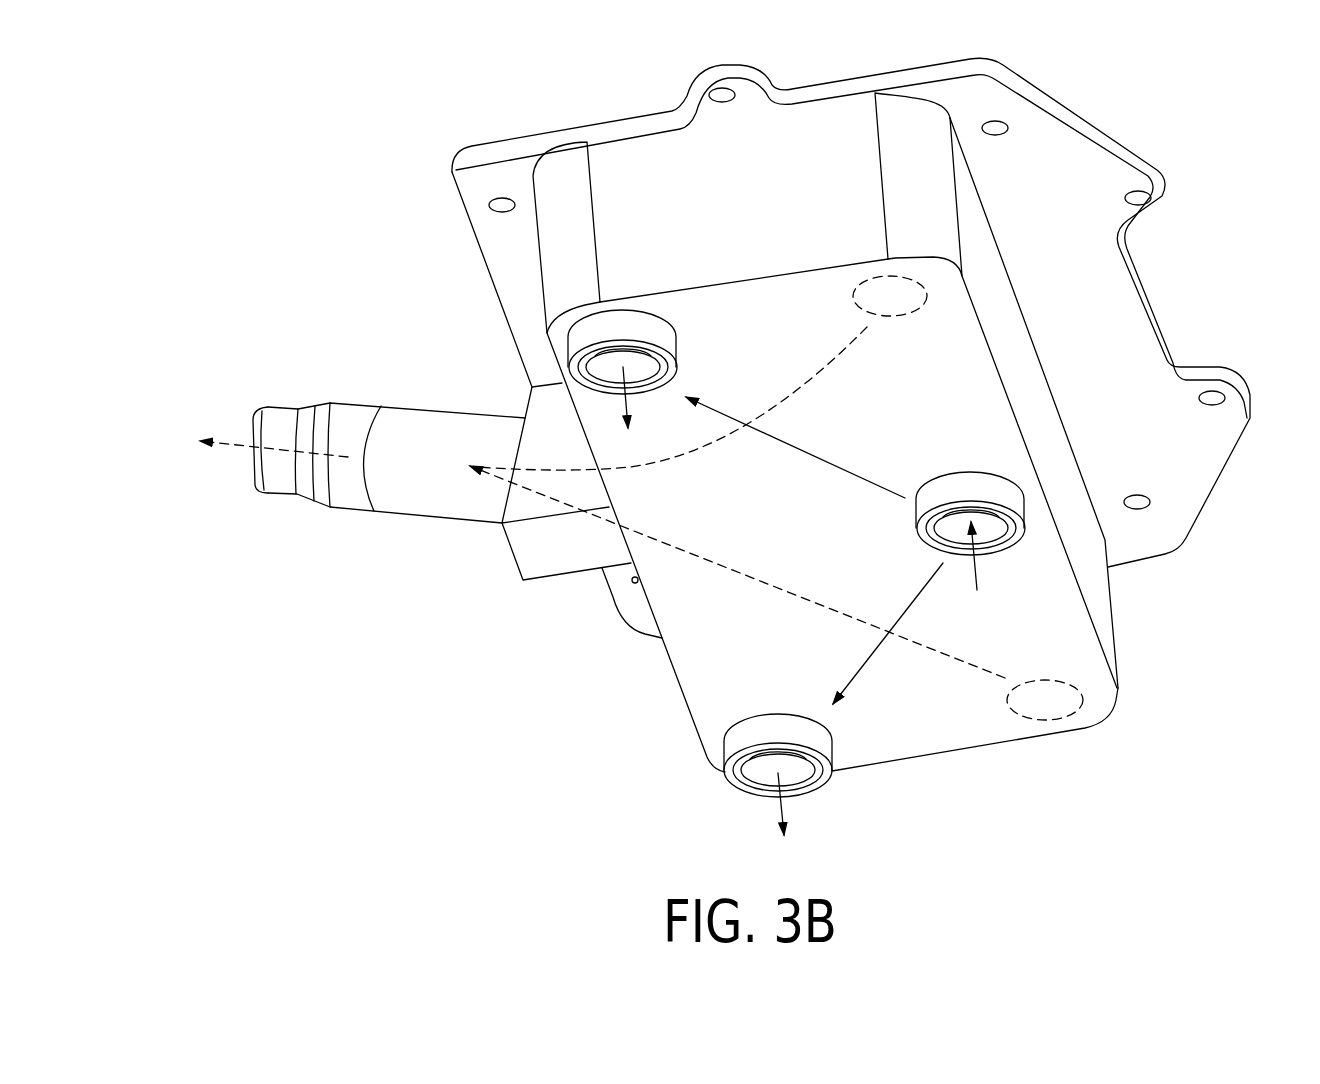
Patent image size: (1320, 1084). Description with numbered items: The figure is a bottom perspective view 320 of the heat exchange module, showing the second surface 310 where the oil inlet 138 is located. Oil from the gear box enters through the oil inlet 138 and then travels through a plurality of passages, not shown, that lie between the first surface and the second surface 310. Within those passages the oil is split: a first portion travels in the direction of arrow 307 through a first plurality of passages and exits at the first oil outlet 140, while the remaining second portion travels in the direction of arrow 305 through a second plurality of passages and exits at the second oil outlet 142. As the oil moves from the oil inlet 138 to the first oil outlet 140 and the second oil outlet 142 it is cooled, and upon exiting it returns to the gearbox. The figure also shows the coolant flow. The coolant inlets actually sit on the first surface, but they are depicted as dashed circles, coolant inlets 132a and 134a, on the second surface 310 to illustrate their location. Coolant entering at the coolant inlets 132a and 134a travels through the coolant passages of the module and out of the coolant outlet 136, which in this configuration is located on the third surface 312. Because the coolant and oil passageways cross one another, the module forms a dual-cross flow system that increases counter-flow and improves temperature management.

The bottom perspective view 320 is at (190, 177).
The second oil outlet 142 is at (570, 341).
The coolant inlet 132a is at (928, 295).
The arrow 305 is at (783, 442).
The coolant outlet 136 is at (254, 473).
The third surface 312 is at (508, 552).
The oil inlet 138 is at (1010, 541).
The arrow 307 is at (862, 664).
The second surface 310 is at (675, 677).
The first oil outlet 140 is at (732, 782).
The coolant inlet 134a is at (1048, 718).